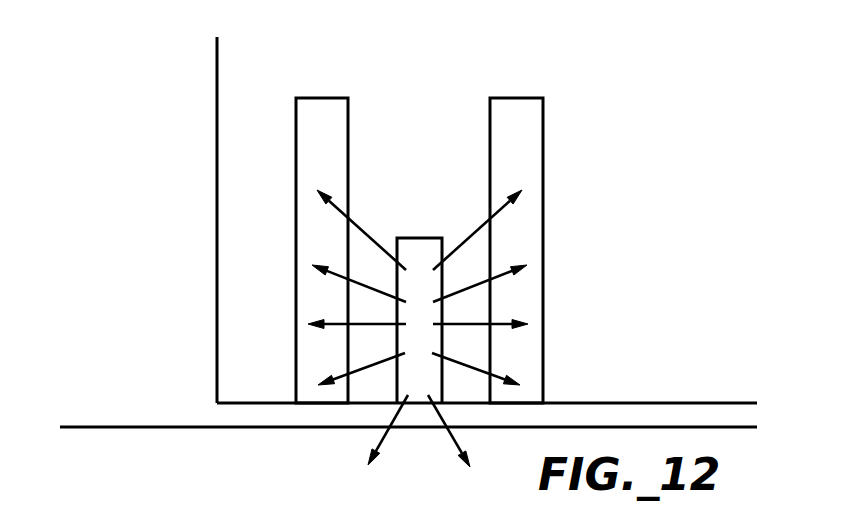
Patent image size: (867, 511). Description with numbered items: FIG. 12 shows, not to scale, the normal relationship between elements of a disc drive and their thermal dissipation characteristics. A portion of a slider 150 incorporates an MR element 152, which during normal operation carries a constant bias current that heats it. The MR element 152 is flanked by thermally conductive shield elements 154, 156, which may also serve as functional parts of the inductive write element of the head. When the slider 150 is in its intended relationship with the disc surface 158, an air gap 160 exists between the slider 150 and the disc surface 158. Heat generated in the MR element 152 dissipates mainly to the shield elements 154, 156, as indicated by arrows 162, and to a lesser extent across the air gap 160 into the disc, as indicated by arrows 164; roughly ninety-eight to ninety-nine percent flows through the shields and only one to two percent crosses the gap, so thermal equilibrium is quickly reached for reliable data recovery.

The slider 150 is at (217, 198).
The MR element 152 is at (412, 238).
The shield element 154 is at (348, 165).
The shield element 156 is at (543, 165).
The disc surface 158 is at (183, 427).
The air gap 160 is at (600, 412).
The arrows 162 is at (498, 217).
The arrows 164 is at (380, 437).